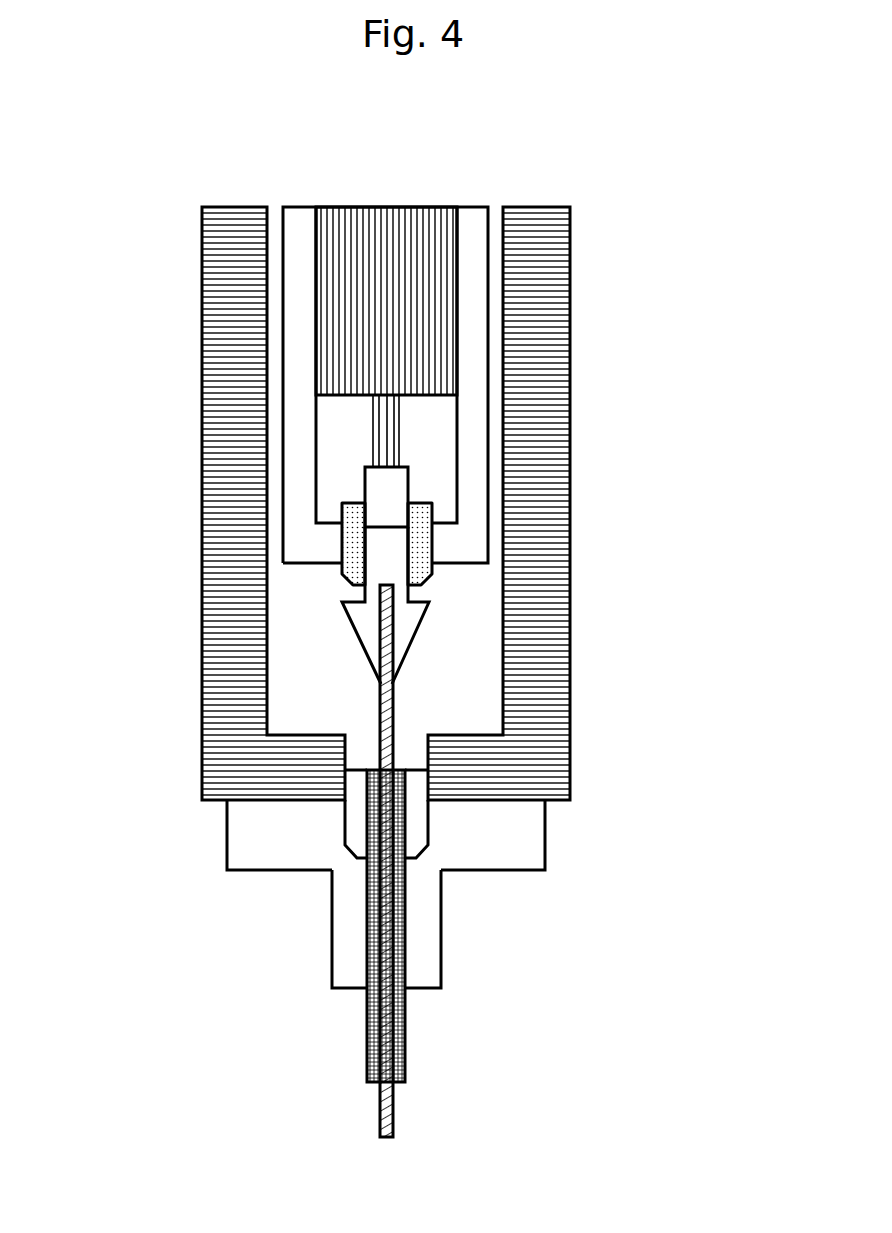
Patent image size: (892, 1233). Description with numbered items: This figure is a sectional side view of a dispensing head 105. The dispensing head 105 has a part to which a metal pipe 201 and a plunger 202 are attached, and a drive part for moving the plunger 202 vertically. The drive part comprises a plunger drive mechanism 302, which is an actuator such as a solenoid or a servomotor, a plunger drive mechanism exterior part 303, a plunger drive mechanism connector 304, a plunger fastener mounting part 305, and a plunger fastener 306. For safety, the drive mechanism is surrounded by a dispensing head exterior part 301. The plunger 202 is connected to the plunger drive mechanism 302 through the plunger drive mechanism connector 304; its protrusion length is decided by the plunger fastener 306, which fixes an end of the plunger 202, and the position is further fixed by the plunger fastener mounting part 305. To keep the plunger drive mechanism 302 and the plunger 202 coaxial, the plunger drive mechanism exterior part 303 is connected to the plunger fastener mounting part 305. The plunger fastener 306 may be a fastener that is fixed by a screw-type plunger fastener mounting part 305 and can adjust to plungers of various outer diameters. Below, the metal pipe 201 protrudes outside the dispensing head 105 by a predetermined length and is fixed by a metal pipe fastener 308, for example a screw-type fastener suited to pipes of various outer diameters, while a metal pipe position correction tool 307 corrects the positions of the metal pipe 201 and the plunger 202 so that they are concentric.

The dispensing head 105 is at (687, 213).
The metal pipe 201 is at (405, 1028).
The plunger 202 is at (393, 1117).
The dispensing head exterior part 301 is at (201, 330).
The plunger drive mechanism 302 is at (403, 227).
The plunger drive mechanism exterior part 303 is at (290, 533).
The plunger drive mechanism connector 304 is at (372, 487).
The plunger fastener mounting part 305 is at (340, 572).
The plunger fastener 306 is at (402, 640).
The metal pipe position correction tool 307 is at (235, 833).
The metal pipe fastener 308 is at (343, 837).